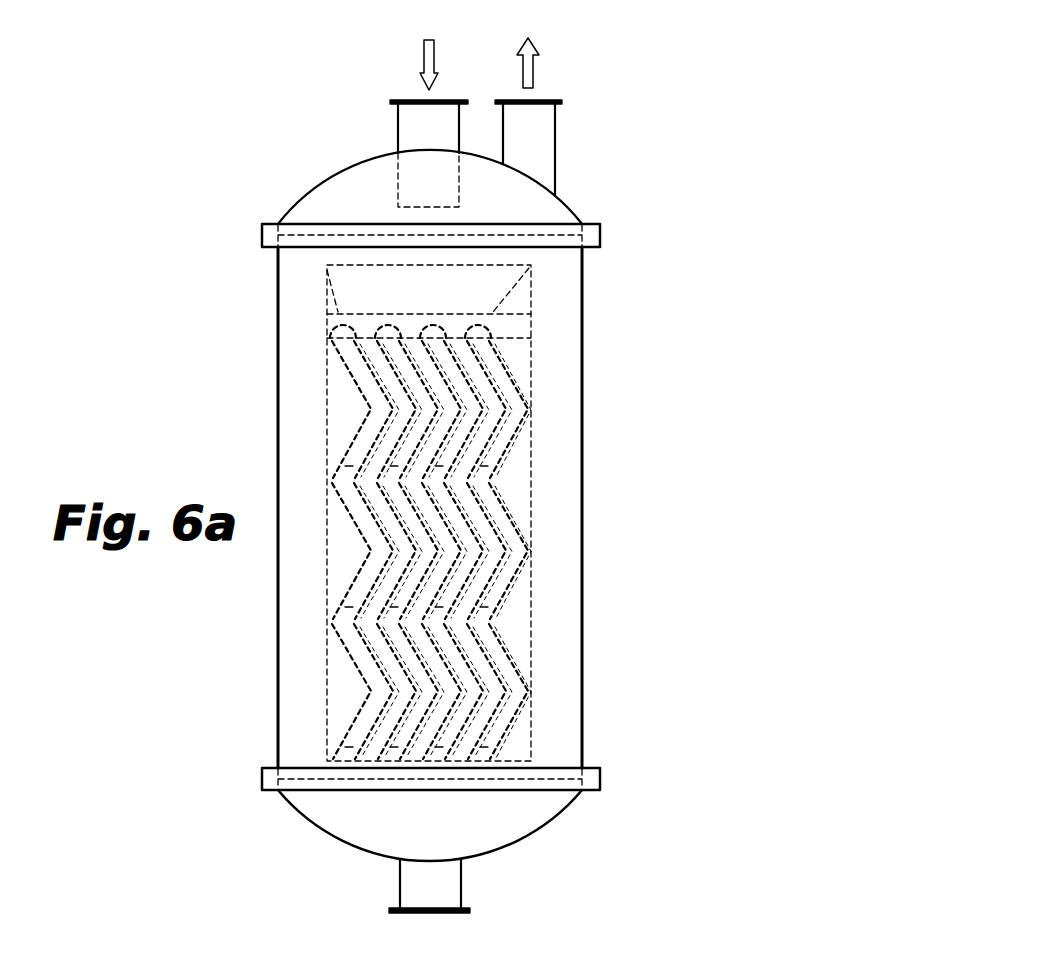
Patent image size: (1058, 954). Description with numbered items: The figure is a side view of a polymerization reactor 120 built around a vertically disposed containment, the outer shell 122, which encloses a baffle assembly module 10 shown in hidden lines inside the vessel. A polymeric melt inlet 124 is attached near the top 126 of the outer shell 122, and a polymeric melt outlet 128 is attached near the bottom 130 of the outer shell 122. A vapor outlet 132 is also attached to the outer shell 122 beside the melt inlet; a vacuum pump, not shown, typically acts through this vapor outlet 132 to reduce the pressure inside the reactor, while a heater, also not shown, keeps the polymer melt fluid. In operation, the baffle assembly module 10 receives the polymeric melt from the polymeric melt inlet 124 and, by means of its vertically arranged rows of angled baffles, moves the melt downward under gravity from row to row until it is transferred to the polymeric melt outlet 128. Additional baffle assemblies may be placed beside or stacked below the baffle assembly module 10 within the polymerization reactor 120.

The baffle assembly module 10 is at (530, 321).
The polymerization reactor 120 is at (675, 90).
The outer shell 122 is at (278, 320).
The polymeric melt inlet 124 is at (398, 125).
The top 126 is at (340, 183).
The polymeric melt outlet 128 is at (400, 875).
The bottom 130 is at (513, 830).
The vapor outlet 132 is at (554, 125).